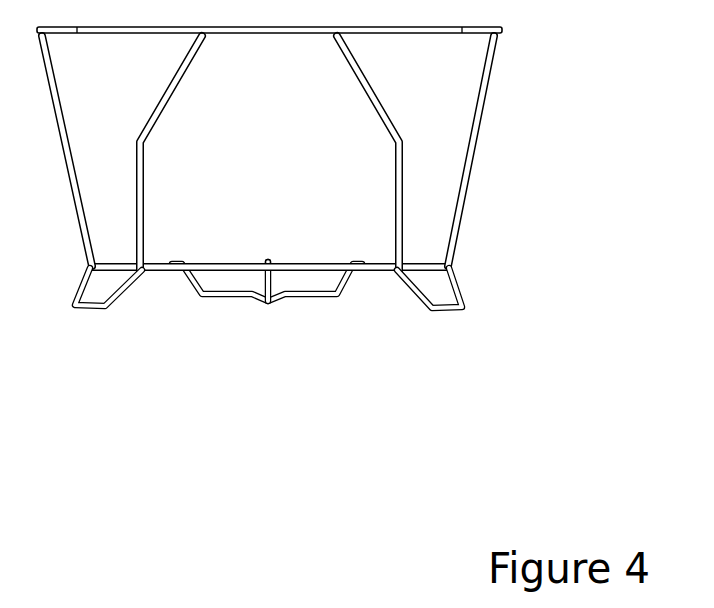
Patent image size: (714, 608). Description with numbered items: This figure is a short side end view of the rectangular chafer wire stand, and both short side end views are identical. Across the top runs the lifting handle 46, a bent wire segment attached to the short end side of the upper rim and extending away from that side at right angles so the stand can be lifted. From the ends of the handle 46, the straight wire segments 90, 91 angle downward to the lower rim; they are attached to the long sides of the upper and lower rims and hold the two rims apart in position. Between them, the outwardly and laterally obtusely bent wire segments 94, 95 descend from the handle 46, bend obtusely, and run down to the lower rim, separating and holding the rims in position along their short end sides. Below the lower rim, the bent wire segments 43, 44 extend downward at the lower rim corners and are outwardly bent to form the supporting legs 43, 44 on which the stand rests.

The lifting handle 46 is at (312, 35).
The straight wire segment 90 is at (65, 142).
The straight wire segment 91 is at (470, 168).
The obtusely bent wire segment 94 is at (152, 123).
The obtusely bent wire segment 95 is at (378, 102).
The supporting leg 43 is at (100, 307).
The supporting leg 44 is at (463, 308).